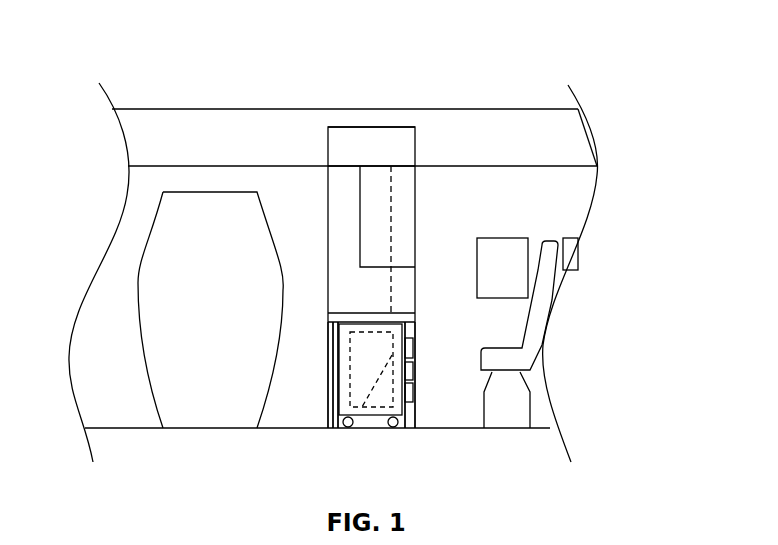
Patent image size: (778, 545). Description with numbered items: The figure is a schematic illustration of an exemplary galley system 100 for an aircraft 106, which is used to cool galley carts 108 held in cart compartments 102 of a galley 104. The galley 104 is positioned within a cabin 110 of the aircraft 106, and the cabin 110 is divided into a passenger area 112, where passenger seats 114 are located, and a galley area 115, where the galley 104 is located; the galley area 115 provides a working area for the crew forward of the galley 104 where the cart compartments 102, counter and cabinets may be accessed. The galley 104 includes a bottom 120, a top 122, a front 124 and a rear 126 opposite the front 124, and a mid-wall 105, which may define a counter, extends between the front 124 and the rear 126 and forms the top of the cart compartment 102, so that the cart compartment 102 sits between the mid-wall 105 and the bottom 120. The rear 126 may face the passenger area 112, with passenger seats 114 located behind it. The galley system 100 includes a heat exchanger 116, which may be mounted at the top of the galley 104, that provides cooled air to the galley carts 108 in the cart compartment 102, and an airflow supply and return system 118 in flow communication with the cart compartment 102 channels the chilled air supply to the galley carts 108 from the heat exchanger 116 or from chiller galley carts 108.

The galley system 100 is at (378, 58).
The cart compartment 102 is at (408, 425).
The galley 104 is at (320, 322).
The mid-wall 105 is at (367, 313).
The aircraft 106 is at (208, 108).
The galley cart 108 is at (365, 405).
The cabin 110 is at (515, 200).
The passenger area 112 is at (572, 200).
The passenger seat 114 is at (538, 327).
The galley area 115 is at (351, 205).
The heat exchanger 116 is at (391, 127).
The airflow supply and return system 118 is at (417, 345).
The bottom 120 is at (373, 430).
The top 122 is at (340, 165).
The front 124 is at (330, 372).
The rear 126 is at (415, 375).